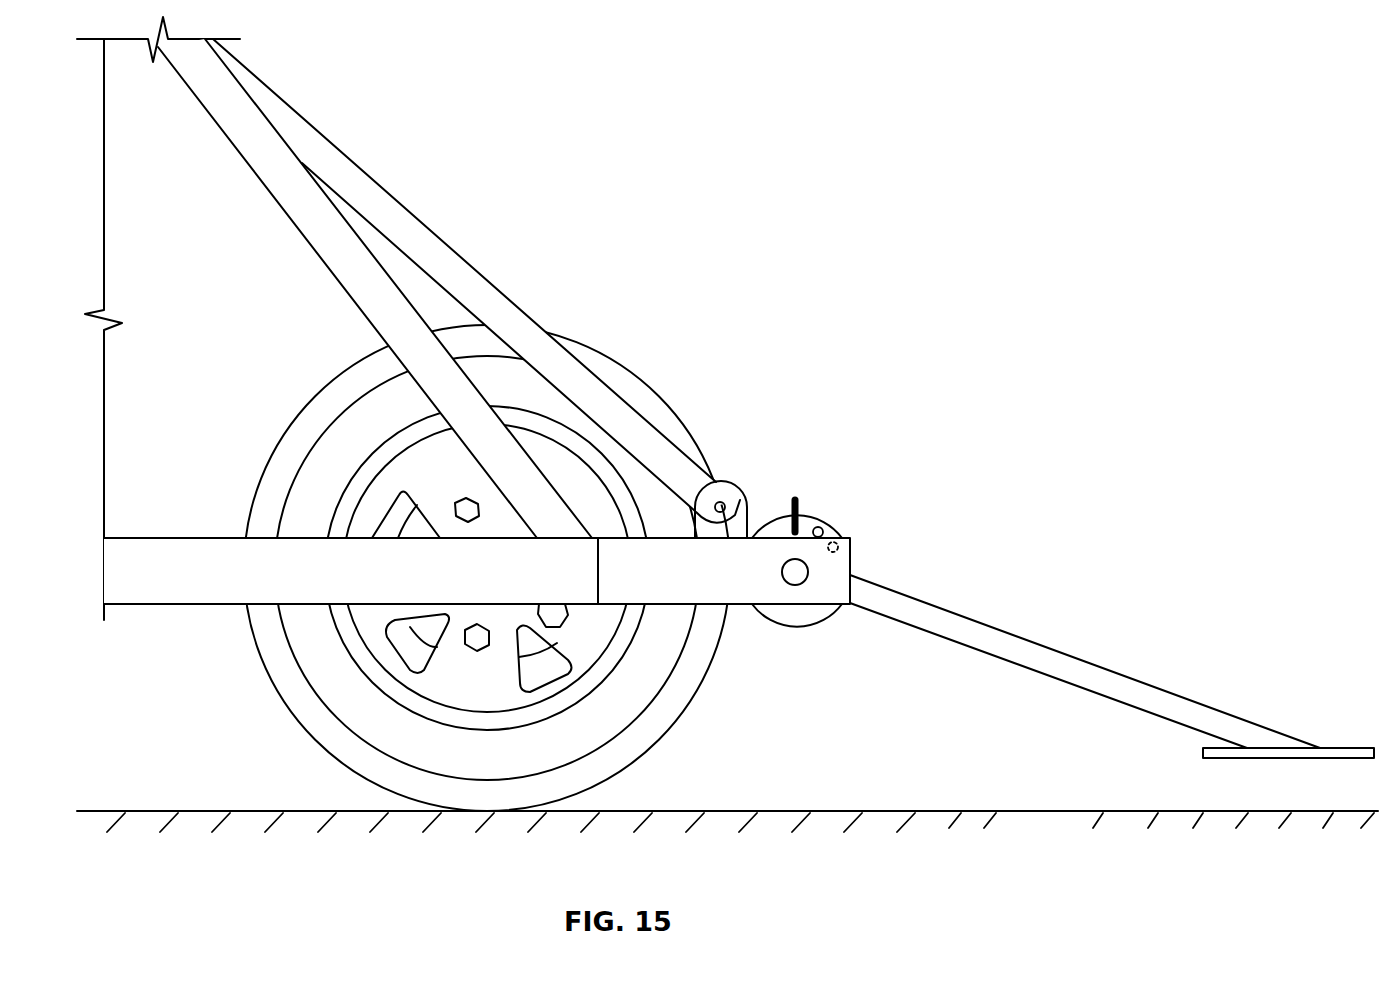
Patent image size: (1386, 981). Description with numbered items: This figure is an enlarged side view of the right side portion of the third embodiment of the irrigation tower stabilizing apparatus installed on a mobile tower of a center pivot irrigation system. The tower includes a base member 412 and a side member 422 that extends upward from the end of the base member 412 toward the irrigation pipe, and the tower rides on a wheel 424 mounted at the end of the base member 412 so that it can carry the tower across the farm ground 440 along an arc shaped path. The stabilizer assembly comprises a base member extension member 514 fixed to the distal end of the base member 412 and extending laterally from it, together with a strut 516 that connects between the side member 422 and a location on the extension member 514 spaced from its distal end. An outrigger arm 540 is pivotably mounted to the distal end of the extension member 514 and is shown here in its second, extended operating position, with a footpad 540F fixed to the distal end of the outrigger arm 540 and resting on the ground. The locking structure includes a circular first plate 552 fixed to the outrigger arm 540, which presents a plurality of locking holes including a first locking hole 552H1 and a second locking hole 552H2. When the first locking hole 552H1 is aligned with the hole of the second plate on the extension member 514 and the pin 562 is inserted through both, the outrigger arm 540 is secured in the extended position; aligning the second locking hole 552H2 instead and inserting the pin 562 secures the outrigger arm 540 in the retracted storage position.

The base member 412 is at (240, 587).
The base member extension member 514 is at (695, 584).
The strut 516 is at (467, 257).
The side member 422 is at (320, 260).
The wheel 424 is at (298, 418).
The pin 562 is at (800, 503).
The first plate 552 is at (793, 627).
The first locking hole 552H1 is at (804, 523).
The second locking hole 552H2 is at (863, 560).
The outrigger arm 540 is at (982, 623).
The footpad 540F is at (1345, 748).
The farm ground 440 is at (1029, 822).